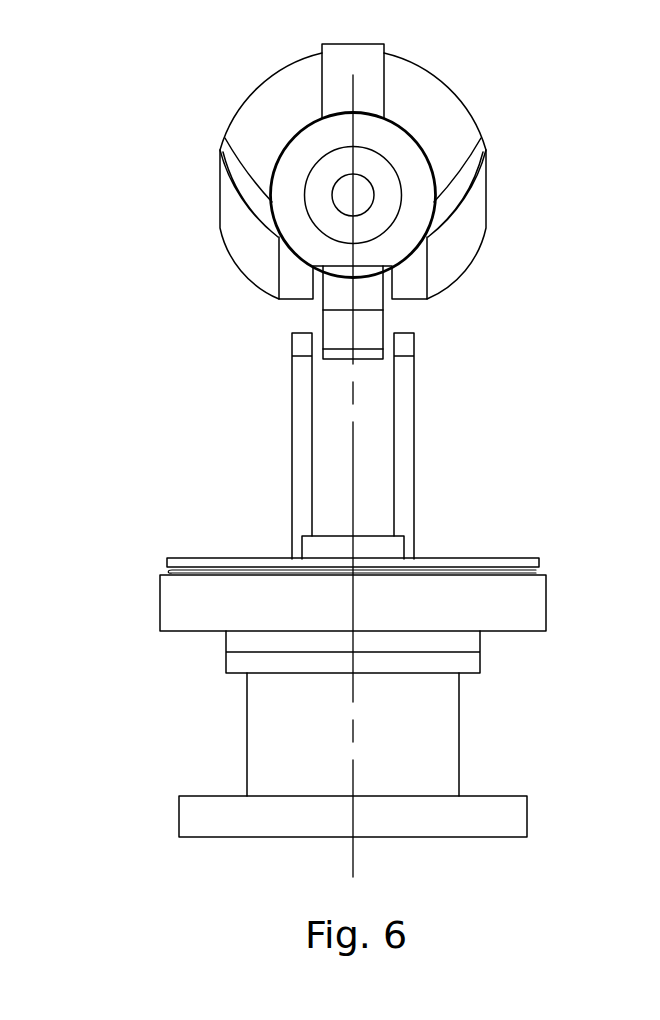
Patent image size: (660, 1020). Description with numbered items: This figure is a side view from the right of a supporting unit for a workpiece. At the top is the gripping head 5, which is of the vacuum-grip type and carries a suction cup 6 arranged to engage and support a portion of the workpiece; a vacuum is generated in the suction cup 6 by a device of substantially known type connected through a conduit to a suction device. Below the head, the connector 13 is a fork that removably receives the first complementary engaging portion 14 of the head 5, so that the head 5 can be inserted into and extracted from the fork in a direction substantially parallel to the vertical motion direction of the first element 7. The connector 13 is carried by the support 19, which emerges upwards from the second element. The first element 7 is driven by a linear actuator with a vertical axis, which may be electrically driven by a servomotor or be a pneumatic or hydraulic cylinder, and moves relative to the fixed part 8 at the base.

The gripping head 5 is at (258, 99).
The suction cup 6 is at (405, 152).
The connector 13 is at (318, 316).
The first complementary engaging portion 14 is at (373, 326).
The first element 7 is at (300, 478).
The support 19 is at (383, 463).
The fixed part 8 is at (262, 740).